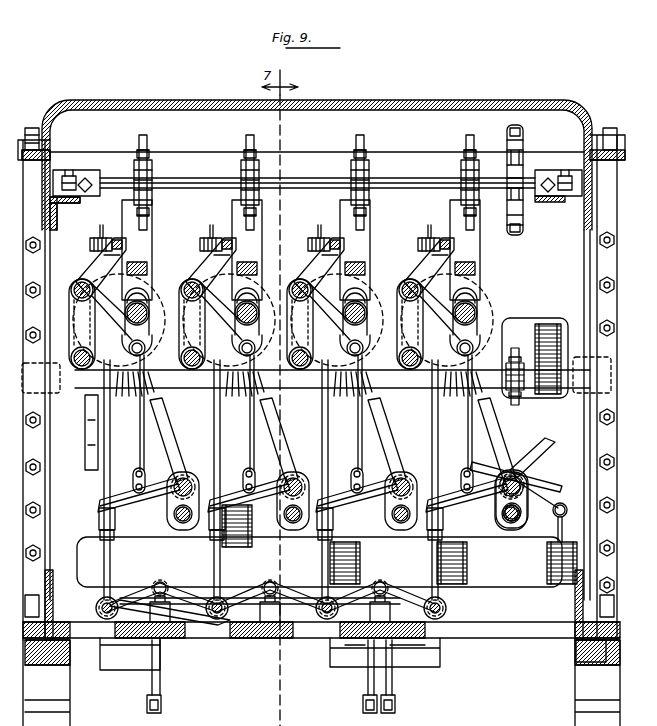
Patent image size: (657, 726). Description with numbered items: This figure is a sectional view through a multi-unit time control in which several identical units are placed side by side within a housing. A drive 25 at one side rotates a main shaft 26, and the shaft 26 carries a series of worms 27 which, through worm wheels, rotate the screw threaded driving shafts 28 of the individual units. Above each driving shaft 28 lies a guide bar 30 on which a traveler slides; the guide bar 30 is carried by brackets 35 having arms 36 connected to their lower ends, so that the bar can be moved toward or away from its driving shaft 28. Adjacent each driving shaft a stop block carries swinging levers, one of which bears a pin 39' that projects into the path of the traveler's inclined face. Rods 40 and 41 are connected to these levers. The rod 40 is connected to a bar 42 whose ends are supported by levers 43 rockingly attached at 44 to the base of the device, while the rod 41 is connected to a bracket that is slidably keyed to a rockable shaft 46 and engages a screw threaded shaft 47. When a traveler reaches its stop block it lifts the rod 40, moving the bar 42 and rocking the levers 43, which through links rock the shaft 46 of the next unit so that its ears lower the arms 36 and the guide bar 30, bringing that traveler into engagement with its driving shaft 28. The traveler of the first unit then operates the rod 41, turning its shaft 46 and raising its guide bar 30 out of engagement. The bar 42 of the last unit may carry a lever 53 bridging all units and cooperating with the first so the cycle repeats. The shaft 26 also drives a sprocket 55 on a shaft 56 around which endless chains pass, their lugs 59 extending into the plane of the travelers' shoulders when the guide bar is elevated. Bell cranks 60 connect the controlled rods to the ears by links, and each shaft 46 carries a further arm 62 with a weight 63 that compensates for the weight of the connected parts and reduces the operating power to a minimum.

The drive 25 is at (540, 345).
The shaft 26 is at (308, 388).
The worms 27 is at (268, 388).
The screw threaded driving shaft 28 is at (145, 320).
The guide bar 30 is at (478, 266).
The brackets 35 is at (478, 312).
The arms 36 is at (470, 370).
The pin 39' is at (267, 226).
The rod 40 is at (228, 496).
The rod 41 is at (86, 482).
The bar 42 is at (100, 618).
The levers 43 is at (128, 600).
The rocking attachment 44 is at (168, 588).
The shaft 46 is at (535, 485).
The screw threaded shaft 47 is at (520, 516).
The lever 53 is at (516, 394).
The sprocket 55 is at (527, 136).
The shaft 56 is at (400, 180).
The lugs 59 is at (364, 147).
The bell cranks 60 is at (161, 680).
The arm 62 is at (243, 440).
The weight 63 is at (252, 520).